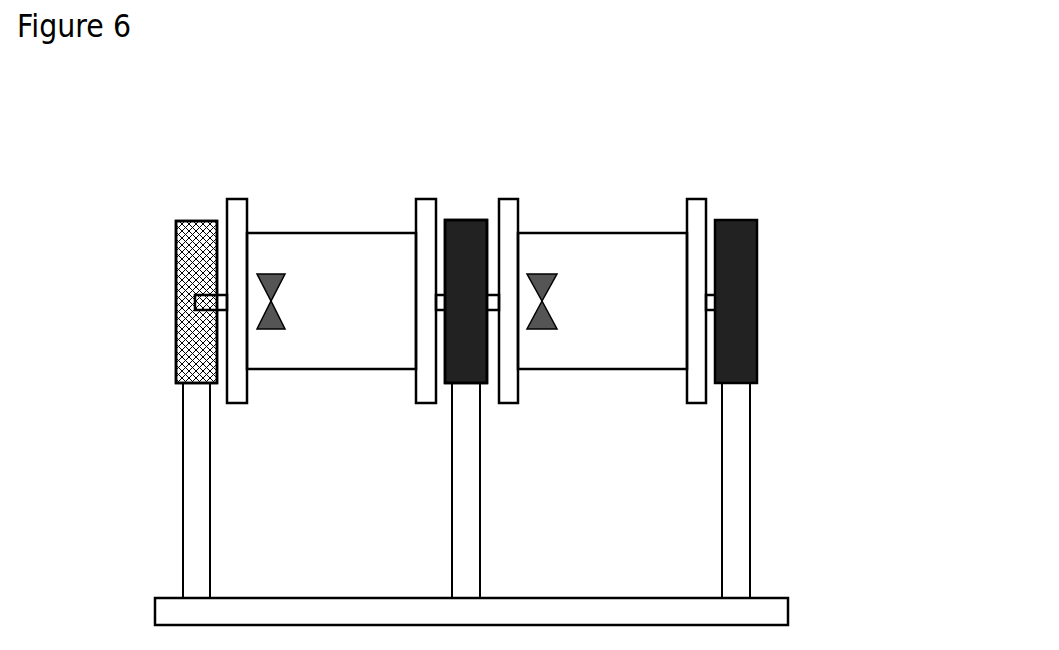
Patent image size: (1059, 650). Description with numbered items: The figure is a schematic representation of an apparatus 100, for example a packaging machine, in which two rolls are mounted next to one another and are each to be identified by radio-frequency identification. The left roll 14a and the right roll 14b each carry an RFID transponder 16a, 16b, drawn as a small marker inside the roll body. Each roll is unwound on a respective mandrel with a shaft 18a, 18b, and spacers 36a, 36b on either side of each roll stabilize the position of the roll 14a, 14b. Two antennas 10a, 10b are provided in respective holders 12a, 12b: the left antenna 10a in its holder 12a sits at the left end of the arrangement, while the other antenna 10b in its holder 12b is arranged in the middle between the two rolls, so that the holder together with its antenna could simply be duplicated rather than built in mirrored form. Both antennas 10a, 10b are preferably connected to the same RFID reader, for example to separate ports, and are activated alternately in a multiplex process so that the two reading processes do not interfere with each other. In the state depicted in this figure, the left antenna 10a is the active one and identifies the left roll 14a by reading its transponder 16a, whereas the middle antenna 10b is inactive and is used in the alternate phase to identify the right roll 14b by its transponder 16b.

The apparatus 100 is at (539, 319).
The left antenna 10a is at (311, 228).
The holder 12a is at (250, 237).
The left roll 14a is at (336, 346).
The RFID transponder 16a is at (355, 227).
The shaft 18a is at (116, 339).
The spacer 36a is at (146, 301).
The other antenna 10b is at (576, 228).
The holder 12b is at (519, 237).
The right roll 14b is at (614, 347).
The RFID transponder 16b is at (631, 227).
The shaft 18b is at (806, 302).
The spacer 36b is at (773, 288).